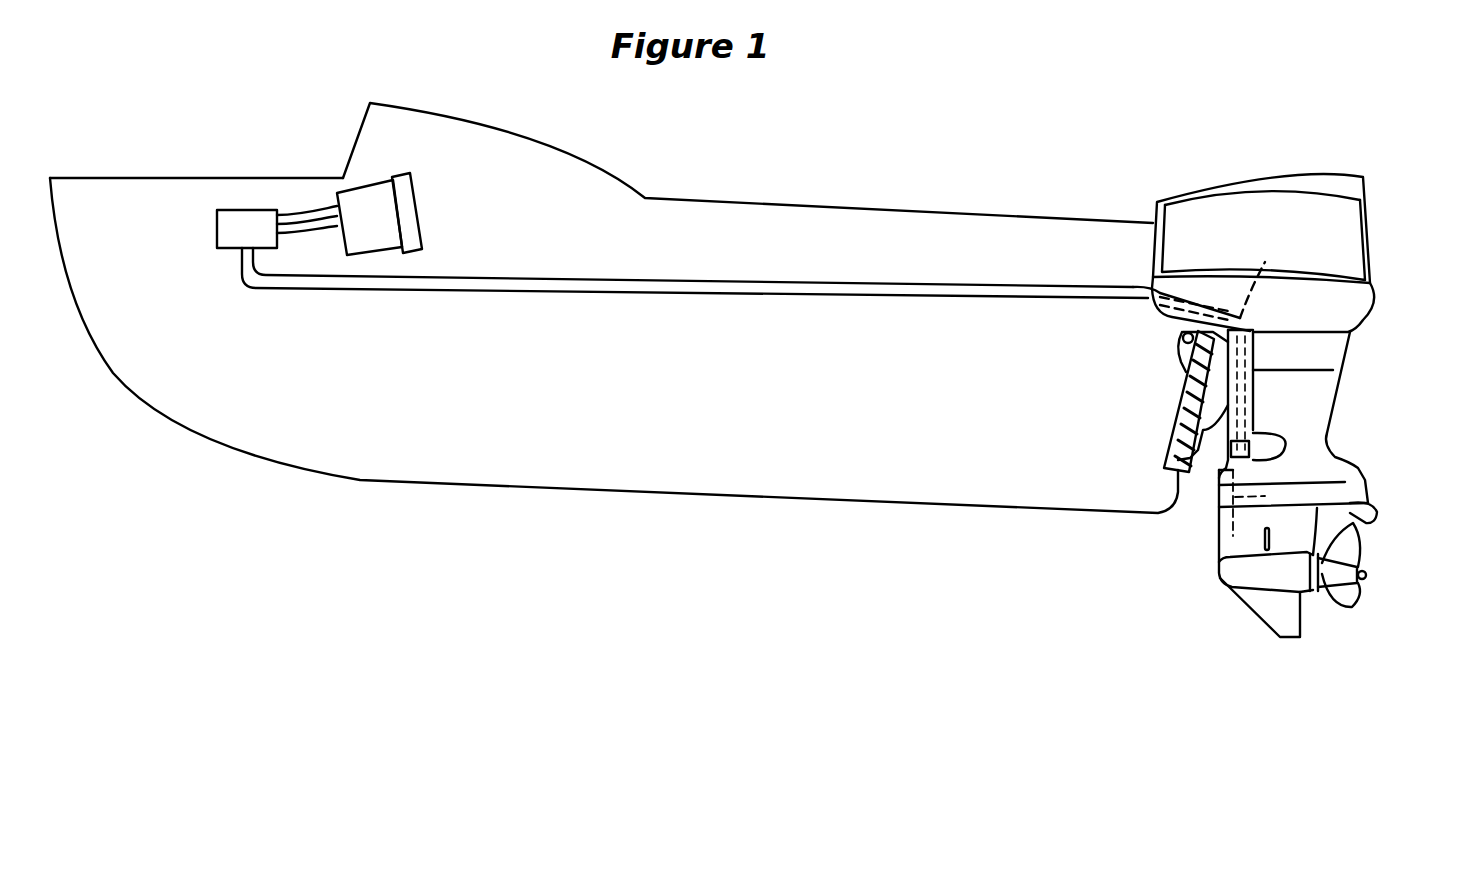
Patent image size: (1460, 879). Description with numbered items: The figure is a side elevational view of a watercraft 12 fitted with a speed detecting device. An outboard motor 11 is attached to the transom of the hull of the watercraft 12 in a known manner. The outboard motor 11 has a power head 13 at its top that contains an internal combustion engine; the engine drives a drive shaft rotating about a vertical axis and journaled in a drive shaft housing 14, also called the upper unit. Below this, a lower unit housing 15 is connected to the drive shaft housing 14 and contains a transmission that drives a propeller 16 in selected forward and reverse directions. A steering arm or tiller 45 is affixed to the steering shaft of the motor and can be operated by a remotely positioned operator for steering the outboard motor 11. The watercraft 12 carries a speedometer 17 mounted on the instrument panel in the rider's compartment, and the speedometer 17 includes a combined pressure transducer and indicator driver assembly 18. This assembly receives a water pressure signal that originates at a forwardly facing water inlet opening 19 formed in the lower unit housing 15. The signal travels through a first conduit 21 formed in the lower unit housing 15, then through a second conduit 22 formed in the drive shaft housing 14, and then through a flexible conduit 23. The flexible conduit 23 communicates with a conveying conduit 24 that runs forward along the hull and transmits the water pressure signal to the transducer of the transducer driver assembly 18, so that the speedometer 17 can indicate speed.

The outboard motor 11 is at (1385, 236).
The watercraft 12 is at (565, 458).
The power head 13 is at (1252, 165).
The drive shaft housing 14 is at (1317, 393).
The lower unit housing 15 is at (1243, 573).
The propeller 16 is at (1356, 595).
The speedometer 17 is at (425, 227).
The combined pressure transducer and indicator driver assembly 18 is at (217, 233).
The water inlet opening 19 is at (1217, 542).
The first conduit 21 is at (1215, 520).
The second conduit 22 is at (1290, 480).
The flexible conduit 23 is at (1265, 262).
The conveying conduit 24 is at (507, 290).
The steering arm or tiller 45 is at (1163, 317).